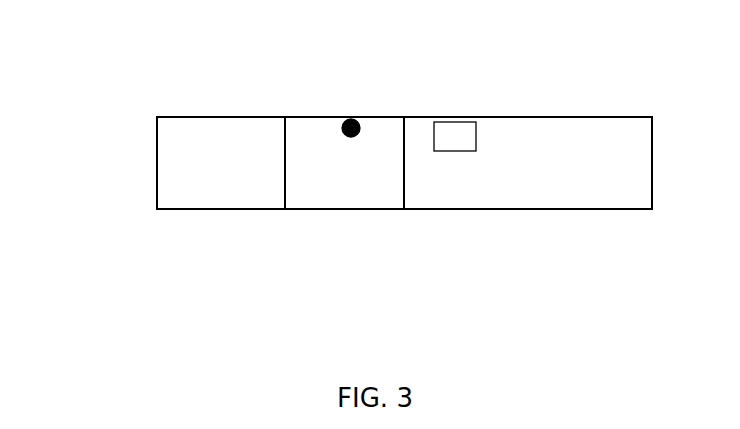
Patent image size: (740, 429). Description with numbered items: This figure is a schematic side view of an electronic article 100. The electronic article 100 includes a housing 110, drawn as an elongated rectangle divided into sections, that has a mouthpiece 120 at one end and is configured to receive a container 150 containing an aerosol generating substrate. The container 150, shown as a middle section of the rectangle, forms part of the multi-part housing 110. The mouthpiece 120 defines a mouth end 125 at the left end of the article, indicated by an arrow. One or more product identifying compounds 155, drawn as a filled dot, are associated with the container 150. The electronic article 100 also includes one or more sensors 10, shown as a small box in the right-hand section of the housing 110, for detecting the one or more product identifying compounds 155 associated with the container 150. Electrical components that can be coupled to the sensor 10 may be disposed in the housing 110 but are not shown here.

The electronic article 100 is at (177, 68).
The housing 110 is at (557, 115).
The mouthpiece 120 is at (218, 209).
The container 150 is at (345, 209).
The mouth end 125 is at (155, 171).
The product identifying compound 155 is at (352, 118).
The sensor 10 is at (453, 125).